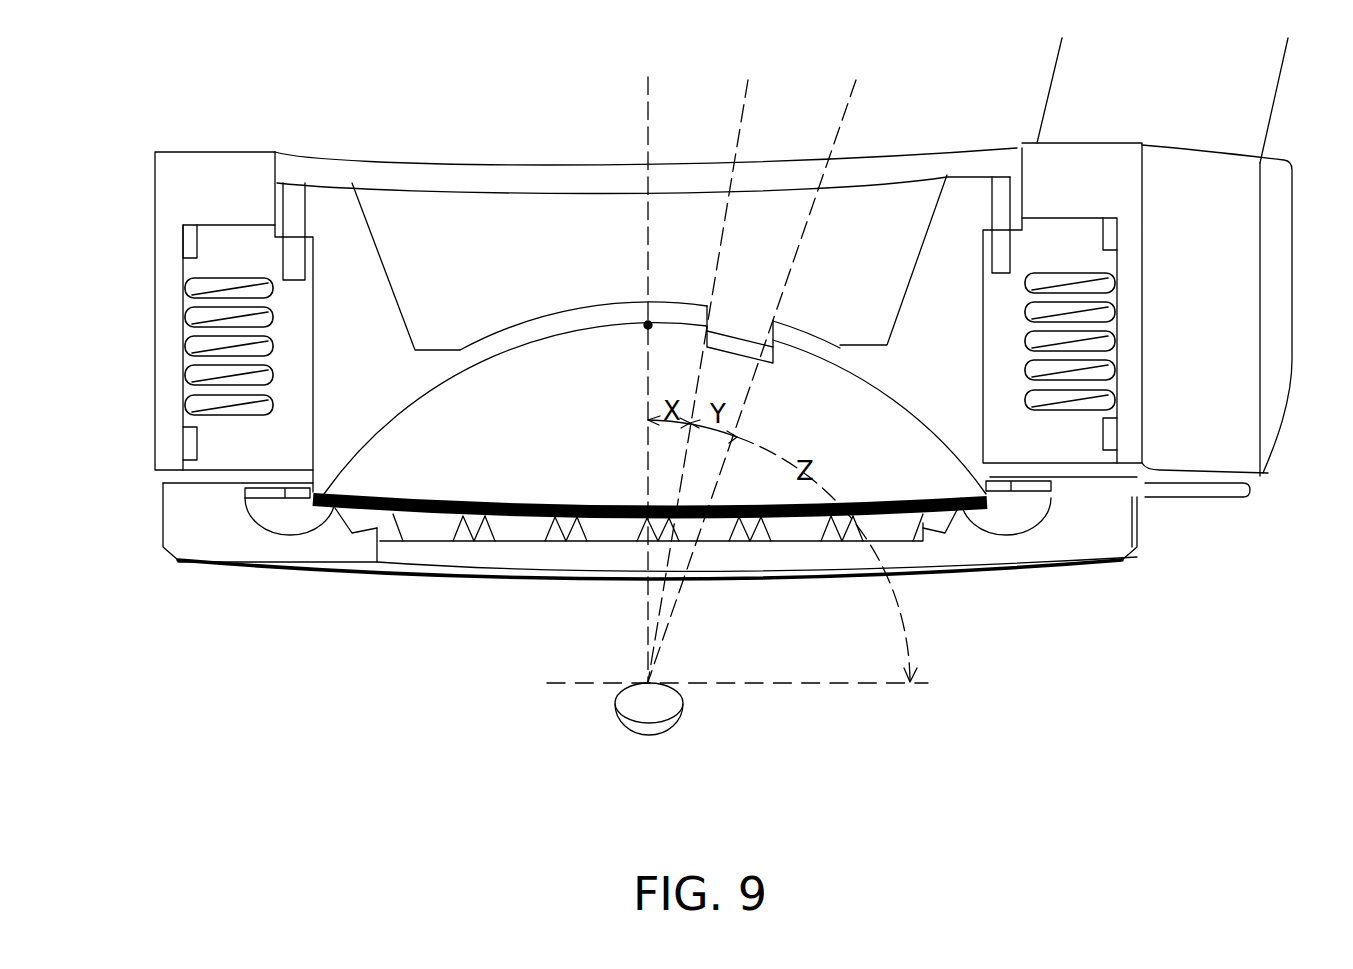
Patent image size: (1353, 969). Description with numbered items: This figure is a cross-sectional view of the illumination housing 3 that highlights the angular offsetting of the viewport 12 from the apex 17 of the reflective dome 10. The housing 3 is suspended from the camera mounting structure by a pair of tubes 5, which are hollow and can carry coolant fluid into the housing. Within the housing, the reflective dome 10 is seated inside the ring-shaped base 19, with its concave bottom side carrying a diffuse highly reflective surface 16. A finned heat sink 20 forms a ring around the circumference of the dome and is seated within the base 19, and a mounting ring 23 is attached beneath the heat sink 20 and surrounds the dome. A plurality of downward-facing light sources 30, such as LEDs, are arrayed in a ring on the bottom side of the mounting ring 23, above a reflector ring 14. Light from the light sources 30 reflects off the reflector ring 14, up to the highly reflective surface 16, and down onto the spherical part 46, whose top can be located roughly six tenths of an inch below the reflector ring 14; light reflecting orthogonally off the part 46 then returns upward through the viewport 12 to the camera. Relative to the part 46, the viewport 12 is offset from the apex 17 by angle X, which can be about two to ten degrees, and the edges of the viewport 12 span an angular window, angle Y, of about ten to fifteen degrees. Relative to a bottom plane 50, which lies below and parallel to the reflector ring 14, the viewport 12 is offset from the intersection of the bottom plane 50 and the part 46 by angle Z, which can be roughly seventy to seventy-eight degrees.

The illumination housing 3 is at (1225, 558).
The pair of tubes 5 is at (1060, 102).
The reflective dome 10 is at (602, 318).
The viewport 12 is at (780, 310).
The reflector ring 14 is at (202, 543).
The highly reflective surface 16 is at (515, 358).
The apex 17 is at (648, 325).
The base 19 is at (218, 200).
The heat sink 20 is at (233, 445).
The mounting ring 23 is at (1175, 480).
The light sources 30 is at (300, 495).
The part 46 is at (662, 735).
The bottom plane 50 is at (767, 683).